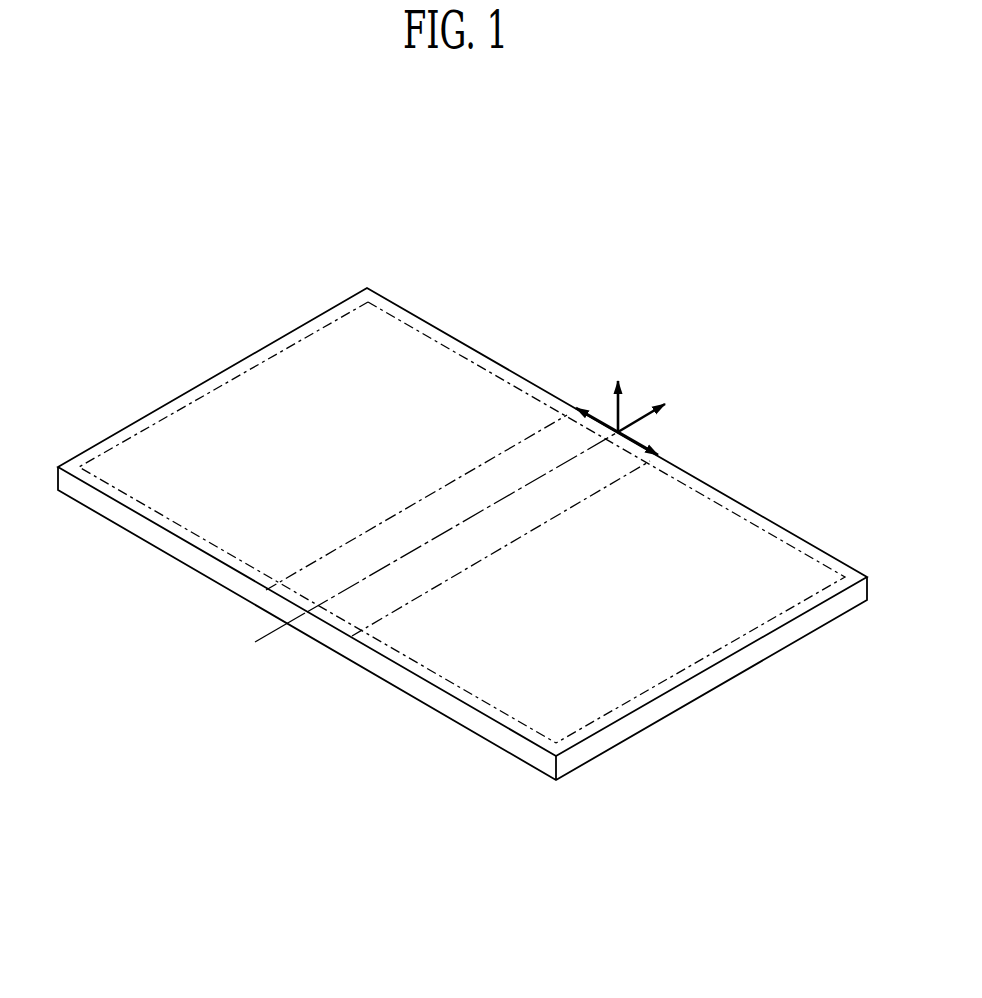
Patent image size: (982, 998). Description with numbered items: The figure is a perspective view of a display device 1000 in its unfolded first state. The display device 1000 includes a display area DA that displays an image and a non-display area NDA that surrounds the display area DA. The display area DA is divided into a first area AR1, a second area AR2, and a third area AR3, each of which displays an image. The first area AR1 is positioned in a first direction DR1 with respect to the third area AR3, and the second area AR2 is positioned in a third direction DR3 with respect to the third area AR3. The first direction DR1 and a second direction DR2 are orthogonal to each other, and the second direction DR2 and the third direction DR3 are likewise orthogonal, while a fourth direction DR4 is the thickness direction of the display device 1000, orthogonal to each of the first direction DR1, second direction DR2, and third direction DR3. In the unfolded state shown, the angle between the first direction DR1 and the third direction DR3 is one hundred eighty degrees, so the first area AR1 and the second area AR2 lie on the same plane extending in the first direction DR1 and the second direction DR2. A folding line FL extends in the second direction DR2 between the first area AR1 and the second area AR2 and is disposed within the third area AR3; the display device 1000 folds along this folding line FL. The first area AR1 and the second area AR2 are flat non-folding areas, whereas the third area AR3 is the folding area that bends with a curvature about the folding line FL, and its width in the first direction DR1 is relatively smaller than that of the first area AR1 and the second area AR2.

The display device 1000 is at (436, 254).
The non-display area NDA is at (223, 375).
The display area DA is at (207, 424).
The first area AR1 is at (458, 386).
The second area AR2 is at (707, 540).
The third area AR3 is at (485, 478).
The folding line FL is at (703, 385).
The first direction DR1 is at (590, 401).
The second direction DR2 is at (662, 408).
The third direction DR3 is at (662, 449).
The fourth direction DR4 is at (618, 387).